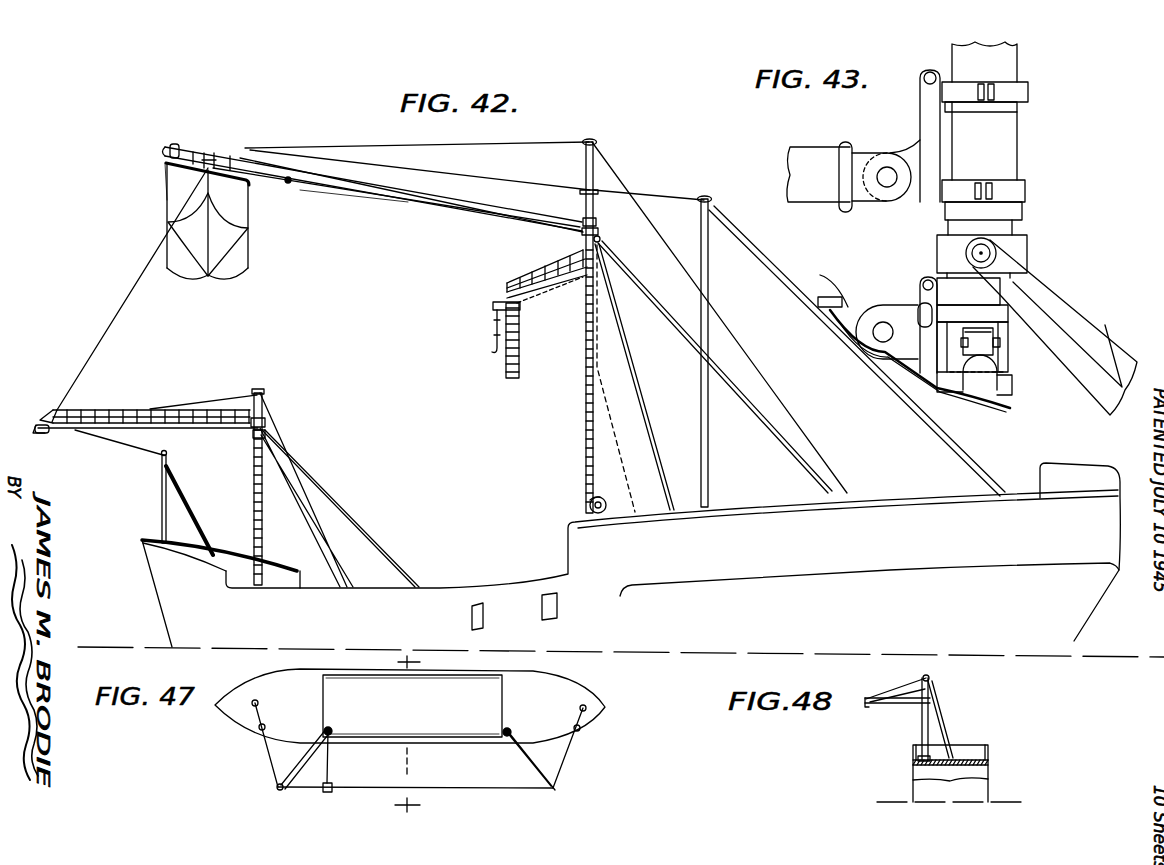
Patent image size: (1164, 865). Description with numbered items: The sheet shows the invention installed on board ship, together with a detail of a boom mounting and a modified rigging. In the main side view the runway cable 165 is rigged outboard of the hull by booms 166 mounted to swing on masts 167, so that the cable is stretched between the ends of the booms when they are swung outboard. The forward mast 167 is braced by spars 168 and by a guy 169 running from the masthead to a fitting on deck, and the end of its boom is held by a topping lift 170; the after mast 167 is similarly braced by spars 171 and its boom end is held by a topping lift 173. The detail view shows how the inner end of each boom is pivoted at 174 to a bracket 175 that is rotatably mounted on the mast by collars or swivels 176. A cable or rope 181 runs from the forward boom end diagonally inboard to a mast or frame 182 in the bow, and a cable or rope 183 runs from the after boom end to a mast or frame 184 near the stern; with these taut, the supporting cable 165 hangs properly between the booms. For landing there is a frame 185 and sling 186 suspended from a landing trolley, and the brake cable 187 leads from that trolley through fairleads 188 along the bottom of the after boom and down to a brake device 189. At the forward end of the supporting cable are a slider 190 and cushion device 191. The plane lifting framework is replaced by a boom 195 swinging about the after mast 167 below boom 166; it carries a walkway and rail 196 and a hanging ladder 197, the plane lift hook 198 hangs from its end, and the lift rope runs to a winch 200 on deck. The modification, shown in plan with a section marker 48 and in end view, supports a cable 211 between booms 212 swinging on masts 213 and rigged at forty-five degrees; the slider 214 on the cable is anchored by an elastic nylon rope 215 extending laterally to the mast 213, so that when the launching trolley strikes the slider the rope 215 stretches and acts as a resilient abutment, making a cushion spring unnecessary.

In FIG. 47, the section line 48 is at (421, 734).
In FIG. 42, the runway cable 165 is at (120, 312).
In FIG. 42, the boom 166 is at (470, 203).
In FIG. 43, the boom 166 is at (808, 157).
In FIG. 42, the mast 167 is at (582, 405).
In FIG. 42, the spars 168 is at (307, 512).
In FIG. 42, the guy 169 is at (280, 433).
In FIG. 42, the topping lift 170 is at (212, 392).
In FIG. 42, the spars 171 is at (635, 373).
In FIG. 43, the spars 171 is at (1087, 378).
In FIG. 42, the topping lift 173 is at (389, 148).
In FIG. 43, the pivot 174 is at (887, 187).
In FIG. 43, the bracket 175 is at (927, 110).
In FIG. 43, the collars or swivels 176 is at (1027, 92).
In FIG. 42, the cable or rope 181 is at (135, 452).
In FIG. 42, the mast or frame 182 is at (158, 505).
In FIG. 42, the cable or rope 183 is at (657, 201).
In FIG. 42, the mast or frame 184 is at (708, 277).
In FIG. 42, the frame 185 is at (250, 199).
In FIG. 42, the sling 186 is at (207, 276).
In FIG. 42, the brake cable 187 is at (408, 203).
In FIG. 42, the fairleads 188 is at (372, 191).
In FIG. 42, the brake device 189 is at (588, 510).
In FIG. 42, the slider 190 is at (58, 403).
In FIG. 42, the cushion device 191 is at (43, 418).
In FIG. 42, the boom 195 is at (495, 305).
In FIG. 43, the boom 195 is at (880, 317).
In FIG. 42, the walkway and rail 196 is at (525, 276).
In FIG. 42, the hanging ladder 197 is at (500, 360).
In FIG. 42, the plane lift hook 198 is at (494, 349).
In FIG. 42, the winch 200 is at (637, 512).
In FIG. 47, the cable 211 is at (362, 790).
In FIG. 47, the booms 212 is at (302, 757).
In FIG. 48, the booms 212 is at (897, 705).
In FIG. 47, the masts 213 is at (333, 730).
In FIG. 48, the masts 213 is at (920, 737).
In FIG. 47, the slider 214 is at (320, 793).
In FIG. 47, the elastic rope or cable 215 is at (330, 766).